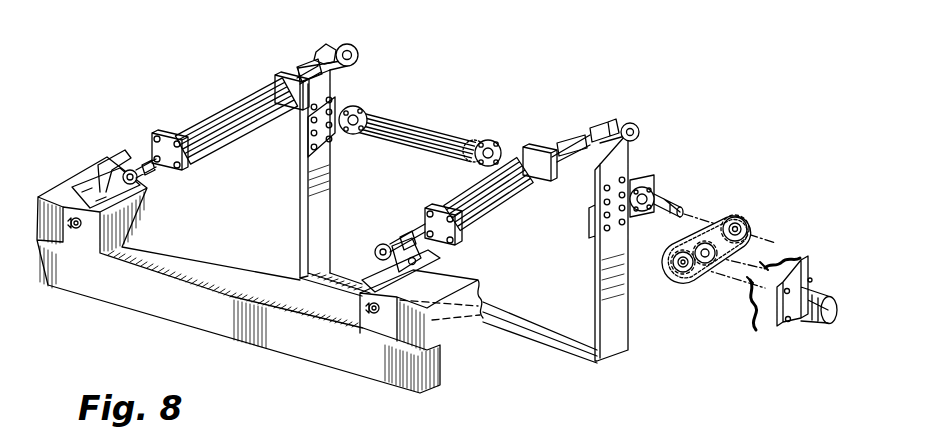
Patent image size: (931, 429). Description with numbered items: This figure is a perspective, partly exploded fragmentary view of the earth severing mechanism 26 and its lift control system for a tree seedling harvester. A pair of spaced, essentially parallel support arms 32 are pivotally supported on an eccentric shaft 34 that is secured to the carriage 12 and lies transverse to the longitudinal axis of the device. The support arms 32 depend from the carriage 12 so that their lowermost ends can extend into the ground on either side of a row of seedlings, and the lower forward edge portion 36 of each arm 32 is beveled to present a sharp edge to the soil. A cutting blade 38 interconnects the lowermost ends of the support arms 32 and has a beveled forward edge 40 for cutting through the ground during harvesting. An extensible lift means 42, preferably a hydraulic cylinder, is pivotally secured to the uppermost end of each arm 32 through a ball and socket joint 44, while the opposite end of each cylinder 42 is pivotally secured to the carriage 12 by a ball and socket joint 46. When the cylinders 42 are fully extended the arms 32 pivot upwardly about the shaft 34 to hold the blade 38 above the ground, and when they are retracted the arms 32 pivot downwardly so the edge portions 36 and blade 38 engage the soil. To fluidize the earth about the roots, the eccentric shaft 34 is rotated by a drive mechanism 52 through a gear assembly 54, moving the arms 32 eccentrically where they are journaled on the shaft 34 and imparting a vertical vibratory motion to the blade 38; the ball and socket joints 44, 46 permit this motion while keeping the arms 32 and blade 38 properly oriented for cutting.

The carriage 12 is at (310, 347).
The earth severing mechanism 26 is at (403, 94).
The support arms 32 is at (318, 196).
The eccentric shaft 34 is at (428, 137).
The lower forward edge portion 36 is at (298, 260).
The cutting blade 38 is at (517, 325).
The beveled forward edge 40 is at (573, 353).
The extensible lift means 42 is at (216, 110).
The ball and socket joint 44 is at (347, 45).
The ball and socket joints 46 is at (97, 192).
The drive mechanism 52 is at (820, 272).
The gear assembly 54 is at (750, 203).